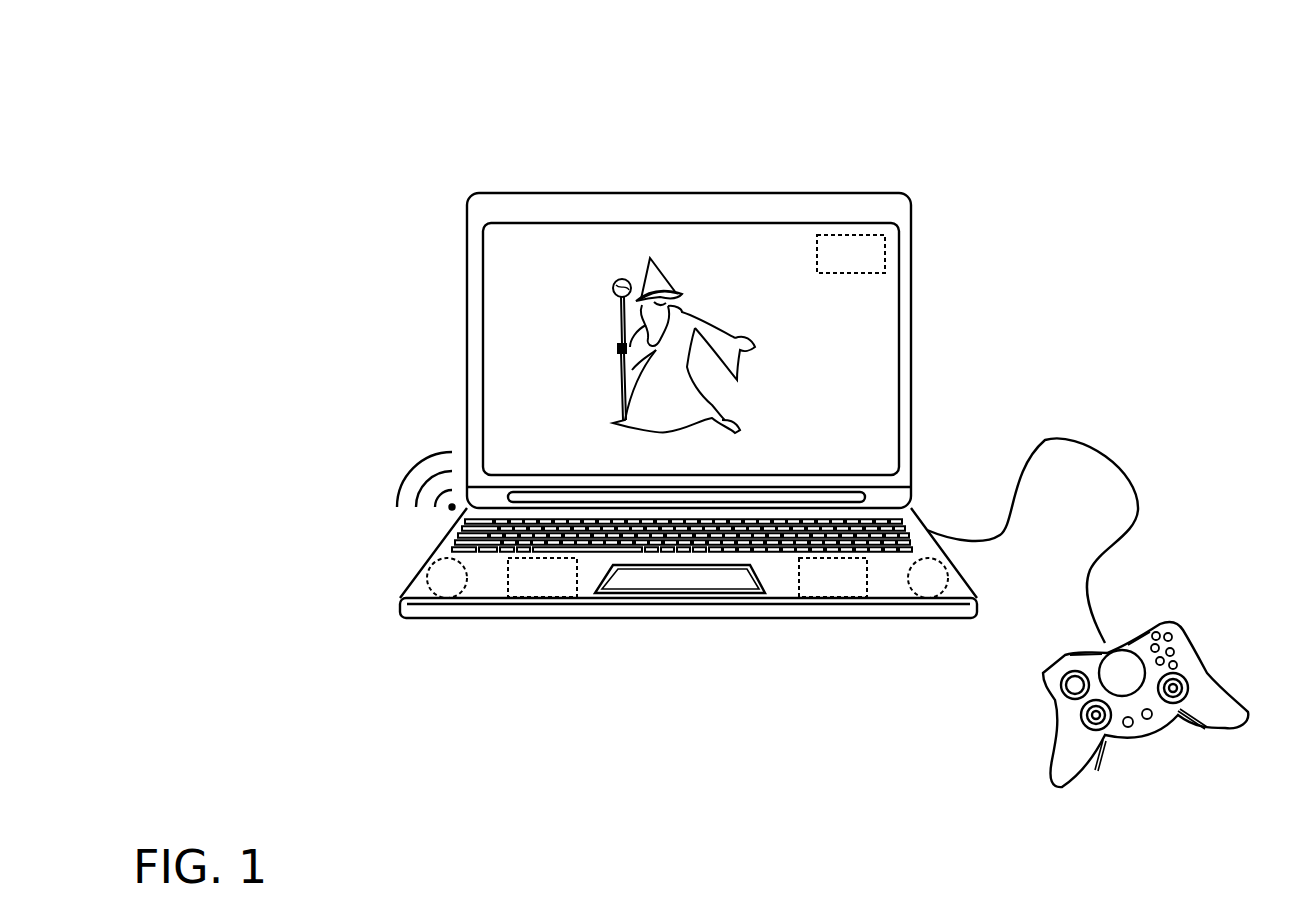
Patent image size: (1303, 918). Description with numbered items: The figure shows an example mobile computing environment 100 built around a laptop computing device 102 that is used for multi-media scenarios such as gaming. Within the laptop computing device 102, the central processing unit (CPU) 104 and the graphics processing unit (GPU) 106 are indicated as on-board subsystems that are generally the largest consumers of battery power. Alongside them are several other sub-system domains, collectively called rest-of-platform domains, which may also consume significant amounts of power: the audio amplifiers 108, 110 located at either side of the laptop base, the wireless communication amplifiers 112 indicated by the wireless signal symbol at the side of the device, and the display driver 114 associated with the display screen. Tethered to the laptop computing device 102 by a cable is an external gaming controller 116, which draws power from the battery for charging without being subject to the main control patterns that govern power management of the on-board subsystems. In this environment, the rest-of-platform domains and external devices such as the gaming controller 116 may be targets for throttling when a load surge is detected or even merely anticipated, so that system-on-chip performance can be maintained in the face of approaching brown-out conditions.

The mobile computing environment 100 is at (250, 82).
The laptop computing device 102 is at (872, 193).
The central processing unit (CPU) 104 is at (566, 591).
The graphics processing unit (GPU) 106 is at (857, 591).
The audio amplifier 108 is at (443, 597).
The audio amplifier 110 is at (928, 593).
The wireless communication amplifiers 112 is at (406, 442).
The display driver 114 is at (875, 267).
The gaming controller 116 is at (1182, 620).